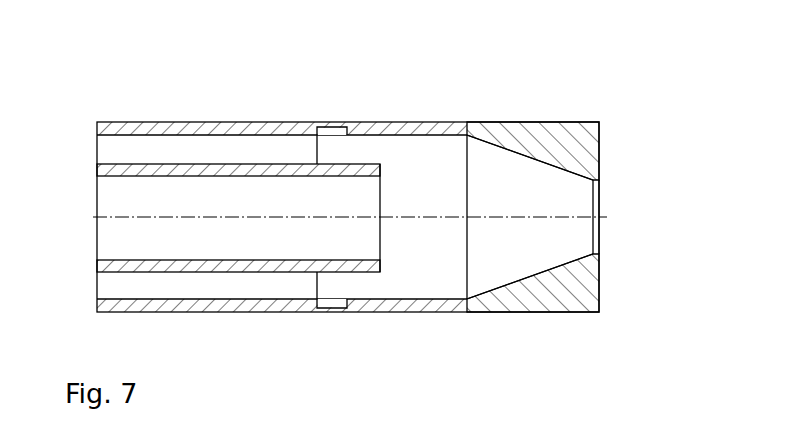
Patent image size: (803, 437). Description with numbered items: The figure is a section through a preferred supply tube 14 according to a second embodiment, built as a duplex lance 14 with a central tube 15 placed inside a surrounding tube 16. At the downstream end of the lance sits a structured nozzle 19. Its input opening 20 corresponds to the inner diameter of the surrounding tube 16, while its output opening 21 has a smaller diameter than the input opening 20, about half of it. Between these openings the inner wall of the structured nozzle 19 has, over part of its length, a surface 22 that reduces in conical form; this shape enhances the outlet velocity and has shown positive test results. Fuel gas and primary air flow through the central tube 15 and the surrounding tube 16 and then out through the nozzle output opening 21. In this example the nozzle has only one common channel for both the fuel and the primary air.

The supply tube 14 is at (194, 103).
The central tube 15 is at (108, 171).
The surrounding tube 16 is at (121, 126).
The structured nozzle 19 is at (480, 108).
The input opening 20 is at (322, 150).
The output opening 21 is at (607, 230).
The surface reducing in conical form 22 is at (544, 295).